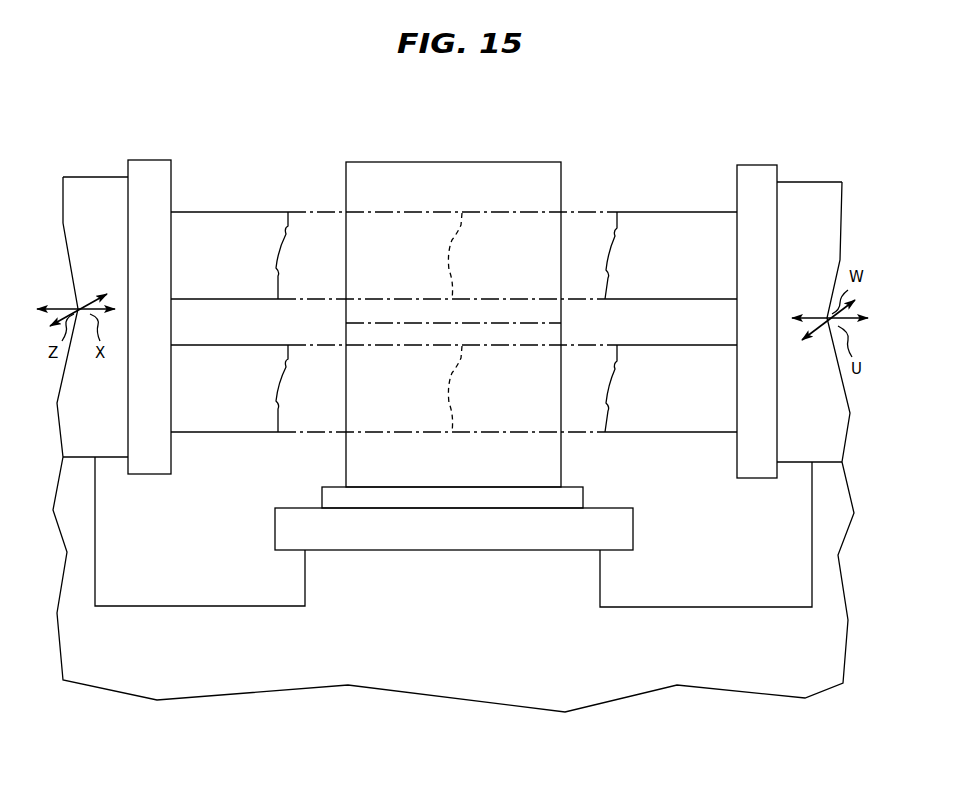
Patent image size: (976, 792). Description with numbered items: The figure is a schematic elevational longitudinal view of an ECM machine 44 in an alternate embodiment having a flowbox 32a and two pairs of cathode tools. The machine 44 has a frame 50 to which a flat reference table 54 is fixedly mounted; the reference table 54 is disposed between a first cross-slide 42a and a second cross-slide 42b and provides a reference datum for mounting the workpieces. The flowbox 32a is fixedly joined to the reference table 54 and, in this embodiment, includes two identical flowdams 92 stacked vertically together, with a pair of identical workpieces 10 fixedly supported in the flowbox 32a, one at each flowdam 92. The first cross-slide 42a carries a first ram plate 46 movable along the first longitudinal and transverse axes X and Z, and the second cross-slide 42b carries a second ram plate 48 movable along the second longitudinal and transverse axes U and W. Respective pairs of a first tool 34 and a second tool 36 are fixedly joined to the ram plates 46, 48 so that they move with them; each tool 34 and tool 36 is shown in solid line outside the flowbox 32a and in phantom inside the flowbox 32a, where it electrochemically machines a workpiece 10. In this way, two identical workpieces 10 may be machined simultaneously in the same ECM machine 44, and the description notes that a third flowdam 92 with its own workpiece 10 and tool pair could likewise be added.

The workpiece 10 is at (456, 262).
The flowbox 32a is at (549, 158).
The first tool 34 is at (214, 212).
The second tool 36 is at (680, 212).
The first cross-slide 42a is at (96, 175).
The second cross-slide 42b is at (795, 180).
The ECM machine 44 is at (313, 692).
The first ram plate 46 is at (153, 160).
The second ram plate 48 is at (757, 165).
The frame 50 is at (491, 667).
The reference table 54 is at (634, 525).
The flowdam 92 is at (544, 228).